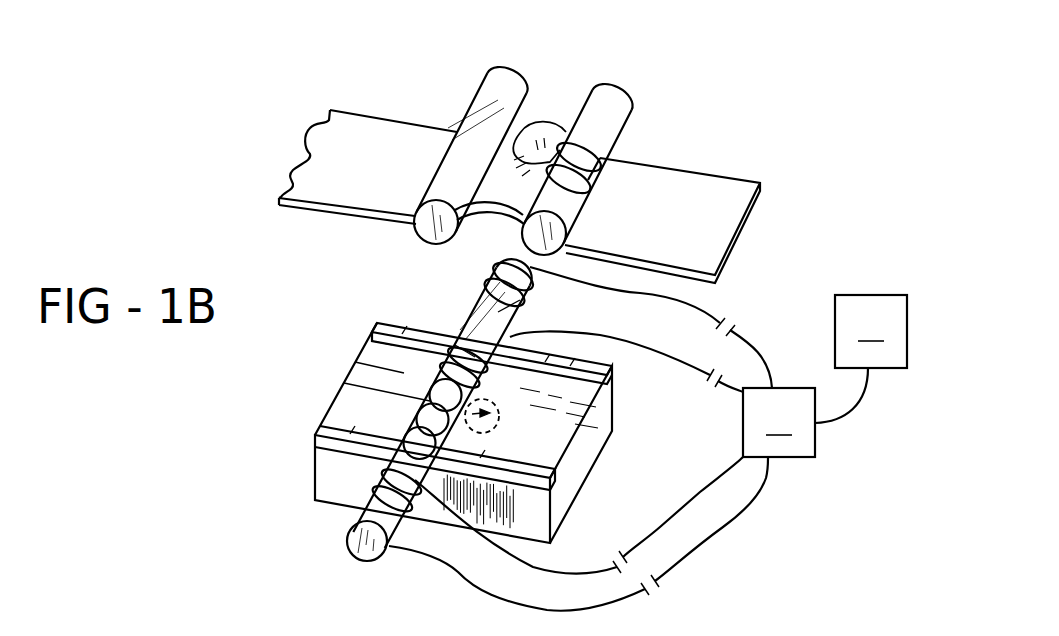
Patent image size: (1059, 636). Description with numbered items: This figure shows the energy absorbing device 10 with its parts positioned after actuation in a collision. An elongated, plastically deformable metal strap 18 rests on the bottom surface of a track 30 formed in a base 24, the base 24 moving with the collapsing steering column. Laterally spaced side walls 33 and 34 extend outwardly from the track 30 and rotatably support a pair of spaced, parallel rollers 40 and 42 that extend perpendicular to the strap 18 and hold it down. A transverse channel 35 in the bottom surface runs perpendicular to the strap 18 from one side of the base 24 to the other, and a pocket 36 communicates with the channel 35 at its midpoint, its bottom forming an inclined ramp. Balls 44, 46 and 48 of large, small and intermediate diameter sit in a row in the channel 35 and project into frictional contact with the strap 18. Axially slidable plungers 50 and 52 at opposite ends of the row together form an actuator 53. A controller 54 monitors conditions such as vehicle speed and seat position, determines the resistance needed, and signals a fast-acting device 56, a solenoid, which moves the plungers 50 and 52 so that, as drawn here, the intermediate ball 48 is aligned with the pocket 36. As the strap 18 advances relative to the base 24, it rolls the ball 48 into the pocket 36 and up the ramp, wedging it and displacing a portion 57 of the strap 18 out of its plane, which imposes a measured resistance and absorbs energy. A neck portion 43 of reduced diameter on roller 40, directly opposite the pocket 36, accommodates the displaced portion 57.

The energy absorbing device 10 is at (776, 287).
The metal strap 18 is at (364, 104).
The base 24 is at (302, 482).
The track 30 is at (318, 432).
The side wall 33 is at (313, 435).
The side wall 34 is at (372, 322).
The transverse channel 35 is at (462, 340).
The pocket 36 is at (500, 418).
The roller 40 is at (613, 93).
The roller 42 is at (505, 80).
The neck portion 43 is at (600, 173).
The ball 44 is at (371, 352).
The ball 46 is at (416, 417).
The ball 48 is at (380, 377).
The plunger 50 is at (503, 321).
The plunger 52 is at (388, 552).
The actuator 53 is at (322, 549).
The controller 54 is at (861, 359).
The fast-acting device 56 is at (615, 420).
The displaced portion 57 is at (545, 138).